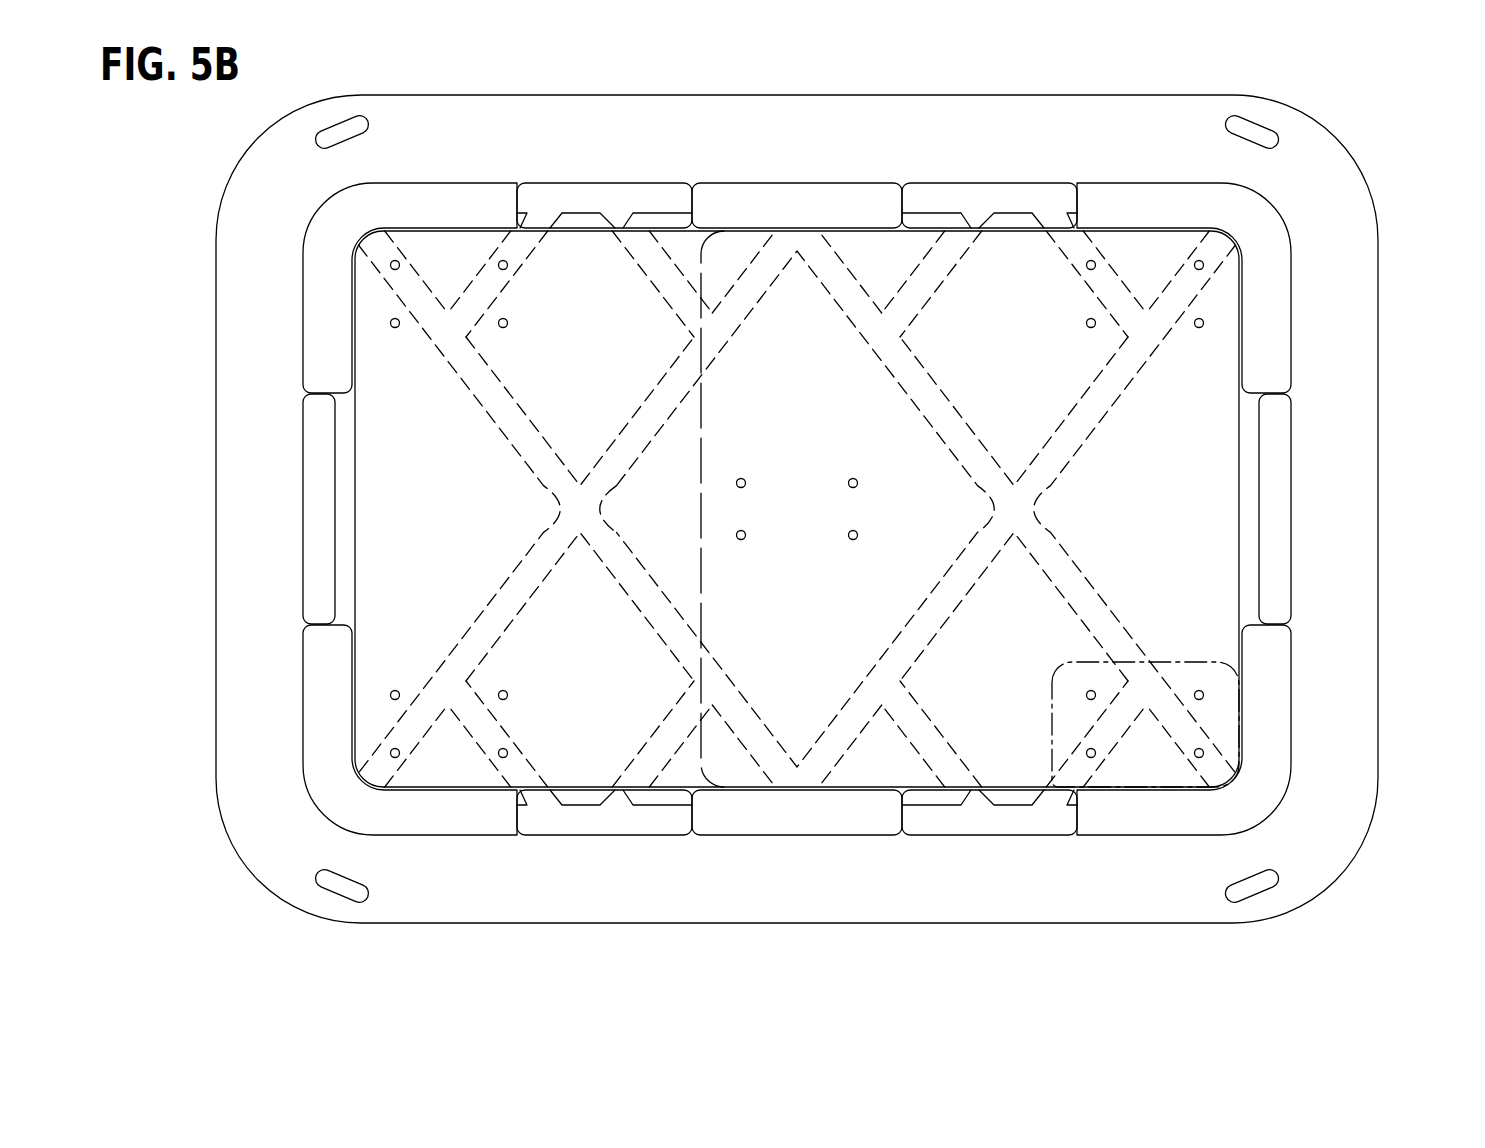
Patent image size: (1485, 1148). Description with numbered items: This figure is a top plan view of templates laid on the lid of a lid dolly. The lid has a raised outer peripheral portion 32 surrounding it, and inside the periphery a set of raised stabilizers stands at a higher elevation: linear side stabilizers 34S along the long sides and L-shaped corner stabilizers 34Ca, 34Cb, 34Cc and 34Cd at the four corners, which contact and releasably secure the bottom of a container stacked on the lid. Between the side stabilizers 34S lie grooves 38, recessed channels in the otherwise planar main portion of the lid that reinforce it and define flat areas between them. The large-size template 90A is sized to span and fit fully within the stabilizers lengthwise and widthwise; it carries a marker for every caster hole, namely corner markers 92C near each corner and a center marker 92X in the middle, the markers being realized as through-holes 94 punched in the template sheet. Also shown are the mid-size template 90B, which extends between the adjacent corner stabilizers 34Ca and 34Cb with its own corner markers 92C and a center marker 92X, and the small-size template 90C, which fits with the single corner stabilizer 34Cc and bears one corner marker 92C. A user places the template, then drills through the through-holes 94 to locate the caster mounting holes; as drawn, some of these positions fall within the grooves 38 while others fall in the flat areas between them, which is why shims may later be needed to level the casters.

The raised outer peripheral portion 32 is at (900, 878).
The corner stabilizer 34Ca is at (408, 200).
The corner stabilizer 34Cb is at (1186, 200).
The corner stabilizer 34Cc is at (1268, 693).
The corner stabilizer 34Cd is at (410, 815).
The side stabilizer 34S is at (795, 200).
The grooves 38 is at (627, 227).
The large-size template 90A is at (1243, 513).
The mid-size template 90B is at (703, 593).
The small-size template 90C is at (1196, 662).
The corner markers 92C is at (516, 332).
The center marker 92X is at (762, 465).
The through-hole 94 is at (507, 318).